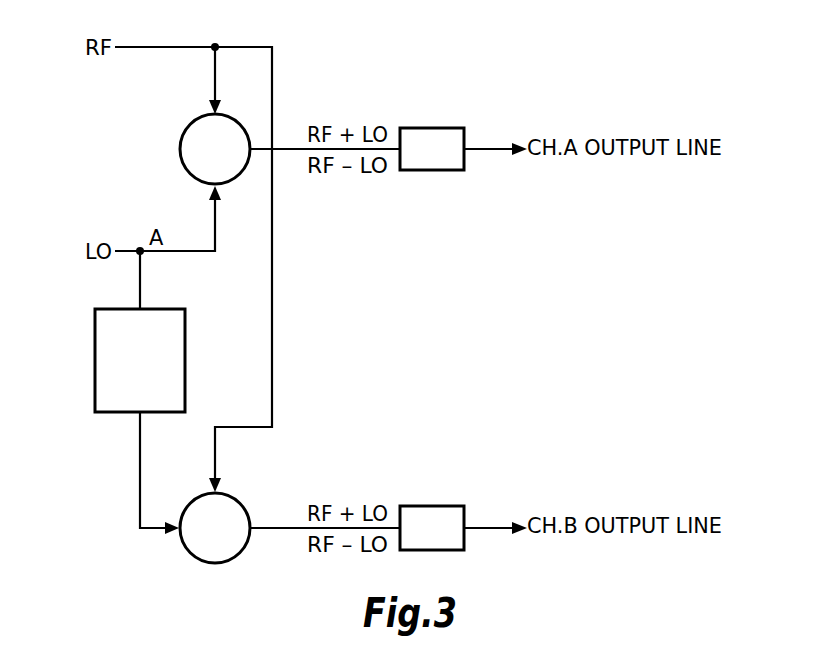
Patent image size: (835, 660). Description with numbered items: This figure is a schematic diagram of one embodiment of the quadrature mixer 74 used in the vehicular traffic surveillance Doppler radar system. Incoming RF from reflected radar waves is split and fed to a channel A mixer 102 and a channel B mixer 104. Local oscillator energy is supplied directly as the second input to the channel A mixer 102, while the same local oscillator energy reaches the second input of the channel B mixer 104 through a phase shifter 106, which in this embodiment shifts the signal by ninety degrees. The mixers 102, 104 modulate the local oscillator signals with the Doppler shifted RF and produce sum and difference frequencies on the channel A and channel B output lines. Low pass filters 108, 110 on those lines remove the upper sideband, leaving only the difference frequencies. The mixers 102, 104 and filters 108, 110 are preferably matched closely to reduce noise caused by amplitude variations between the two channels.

The quadrature mixer 74 is at (538, 70).
The channel A mixer 102 is at (192, 121).
The channel B mixer 104 is at (192, 555).
The phase shifter 106 is at (95, 353).
The low pass filter 108 is at (432, 128).
The low pass filter 110 is at (432, 506).